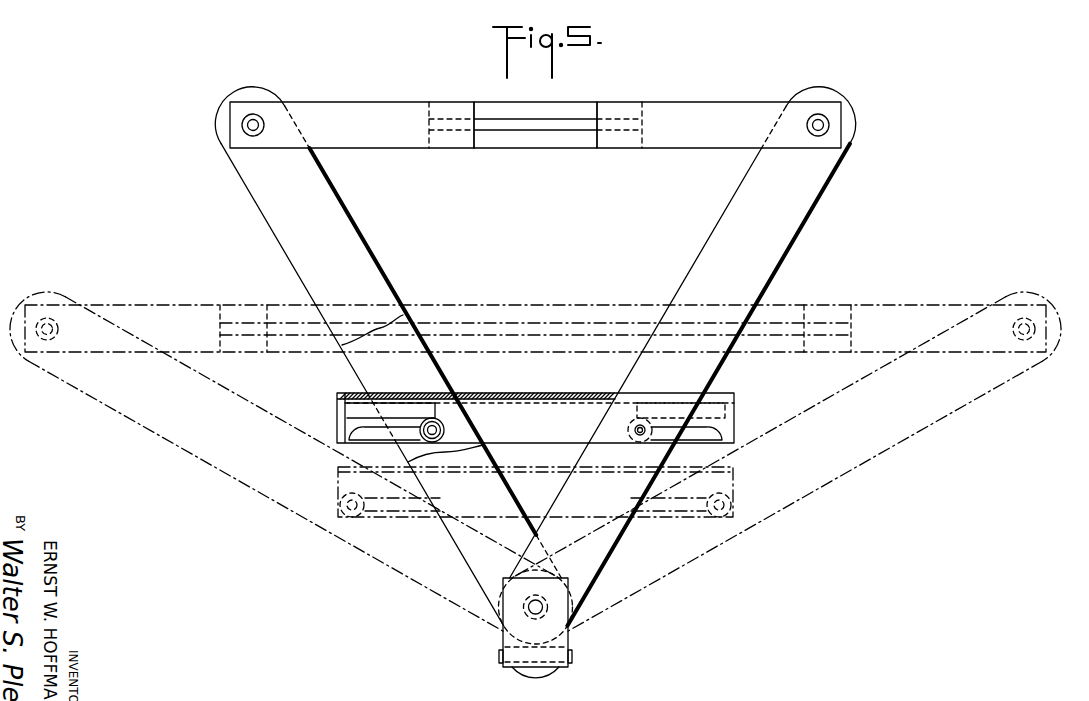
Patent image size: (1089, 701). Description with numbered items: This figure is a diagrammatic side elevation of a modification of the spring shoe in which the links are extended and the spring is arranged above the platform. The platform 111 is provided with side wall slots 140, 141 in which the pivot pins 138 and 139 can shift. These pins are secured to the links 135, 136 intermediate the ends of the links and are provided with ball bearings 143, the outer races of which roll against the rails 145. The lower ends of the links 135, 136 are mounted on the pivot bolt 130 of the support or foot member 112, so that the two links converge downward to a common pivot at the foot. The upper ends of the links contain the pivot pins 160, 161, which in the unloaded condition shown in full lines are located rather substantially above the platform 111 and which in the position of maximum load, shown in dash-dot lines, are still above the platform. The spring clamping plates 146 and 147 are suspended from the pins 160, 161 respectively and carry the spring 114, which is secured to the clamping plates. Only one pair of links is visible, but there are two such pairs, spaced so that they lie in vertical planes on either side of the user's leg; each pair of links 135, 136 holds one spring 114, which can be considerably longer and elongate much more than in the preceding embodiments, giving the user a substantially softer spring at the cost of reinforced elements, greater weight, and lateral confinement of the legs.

The platform 111 is at (734, 393).
The support or foot member 112 is at (565, 636).
The spring 114 is at (503, 148).
The pivot bolt 130 is at (530, 608).
The link 135 is at (358, 253).
The link 136 is at (725, 232).
The pivot pin 138 is at (637, 426).
The pivot pin 139 is at (437, 423).
The side wall slot 140 is at (734, 440).
The side wall slot 141 is at (347, 443).
The ball bearing 143 is at (447, 425).
The rail 145 is at (345, 410).
The spring clamping plate 146 is at (400, 138).
The spring clamping plate 147 is at (677, 140).
The pivot pin 160 is at (250, 127).
The pivot pin 161 is at (827, 125).